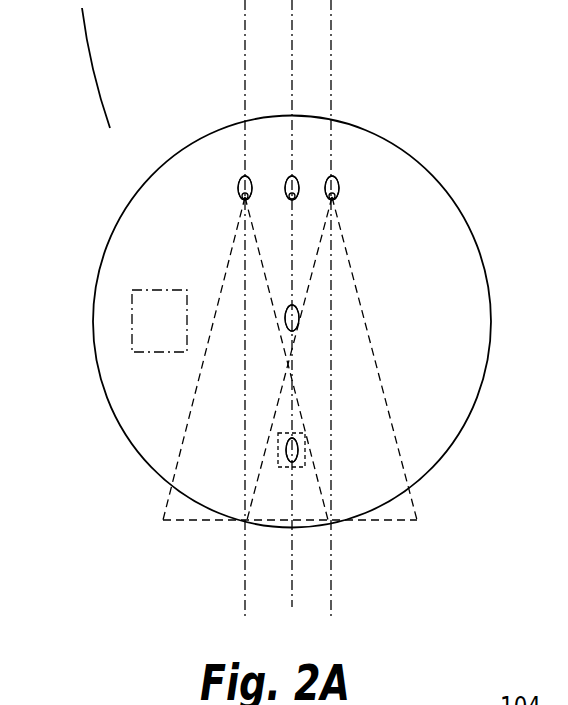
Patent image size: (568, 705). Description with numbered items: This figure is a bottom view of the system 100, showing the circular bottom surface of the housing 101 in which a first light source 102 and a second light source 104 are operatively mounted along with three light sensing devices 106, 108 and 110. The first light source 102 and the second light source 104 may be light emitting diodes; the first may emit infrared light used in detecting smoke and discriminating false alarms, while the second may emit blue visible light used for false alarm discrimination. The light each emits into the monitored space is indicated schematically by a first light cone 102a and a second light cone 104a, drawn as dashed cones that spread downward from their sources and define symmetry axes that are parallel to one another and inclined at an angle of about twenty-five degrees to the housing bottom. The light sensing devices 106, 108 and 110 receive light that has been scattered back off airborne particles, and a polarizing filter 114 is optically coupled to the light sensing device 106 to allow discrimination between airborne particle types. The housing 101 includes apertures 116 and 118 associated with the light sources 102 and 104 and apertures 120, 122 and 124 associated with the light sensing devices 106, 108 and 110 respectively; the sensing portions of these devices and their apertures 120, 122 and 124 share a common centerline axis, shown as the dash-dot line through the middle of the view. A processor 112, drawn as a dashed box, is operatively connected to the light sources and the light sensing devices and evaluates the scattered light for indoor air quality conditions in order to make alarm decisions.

The system 100 is at (456, 704).
The housing 101 is at (483, 258).
The first light source 102 is at (337, 200).
The first light cone 102a is at (389, 410).
The second light source 104 is at (240, 195).
The second light cone 104a is at (190, 418).
The light sensing device 106 is at (278, 440).
The light sensing device 108 is at (295, 321).
The light sensing device 110 is at (297, 195).
The processor 112 is at (132, 308).
The polarizing filter 114 is at (305, 458).
The aperture 116 is at (340, 186).
The aperture 118 is at (240, 180).
The aperture 120 is at (286, 452).
The aperture 122 is at (295, 332).
The aperture 124 is at (290, 184).